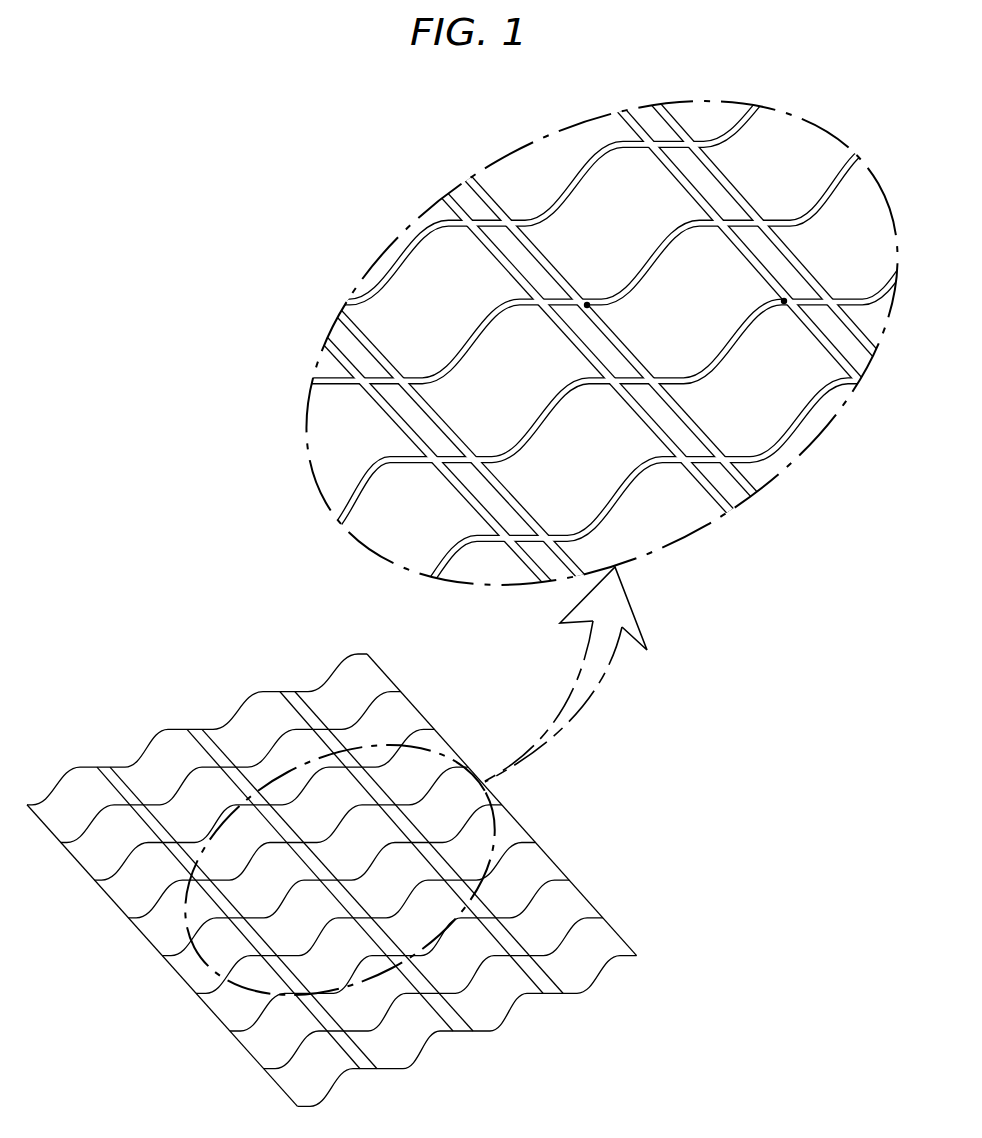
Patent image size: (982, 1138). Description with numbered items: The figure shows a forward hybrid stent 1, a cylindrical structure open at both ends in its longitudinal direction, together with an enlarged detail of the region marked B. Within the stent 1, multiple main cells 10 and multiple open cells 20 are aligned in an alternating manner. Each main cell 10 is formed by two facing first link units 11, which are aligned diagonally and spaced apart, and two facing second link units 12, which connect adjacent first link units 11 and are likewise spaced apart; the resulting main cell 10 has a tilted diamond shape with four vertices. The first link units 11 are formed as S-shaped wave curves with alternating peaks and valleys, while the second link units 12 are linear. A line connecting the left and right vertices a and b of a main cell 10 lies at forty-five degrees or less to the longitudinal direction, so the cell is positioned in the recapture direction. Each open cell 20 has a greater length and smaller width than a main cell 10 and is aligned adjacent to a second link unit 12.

The hybrid stent 1 is at (290, 640).
The main cell 10 is at (500, 310).
The first link unit 11 is at (665, 247).
The second link unit 12 is at (617, 342).
The open cell 20 is at (573, 320).
The vertex a is at (590, 292).
The vertex b is at (788, 290).
The enlarged portion B is at (497, 162).